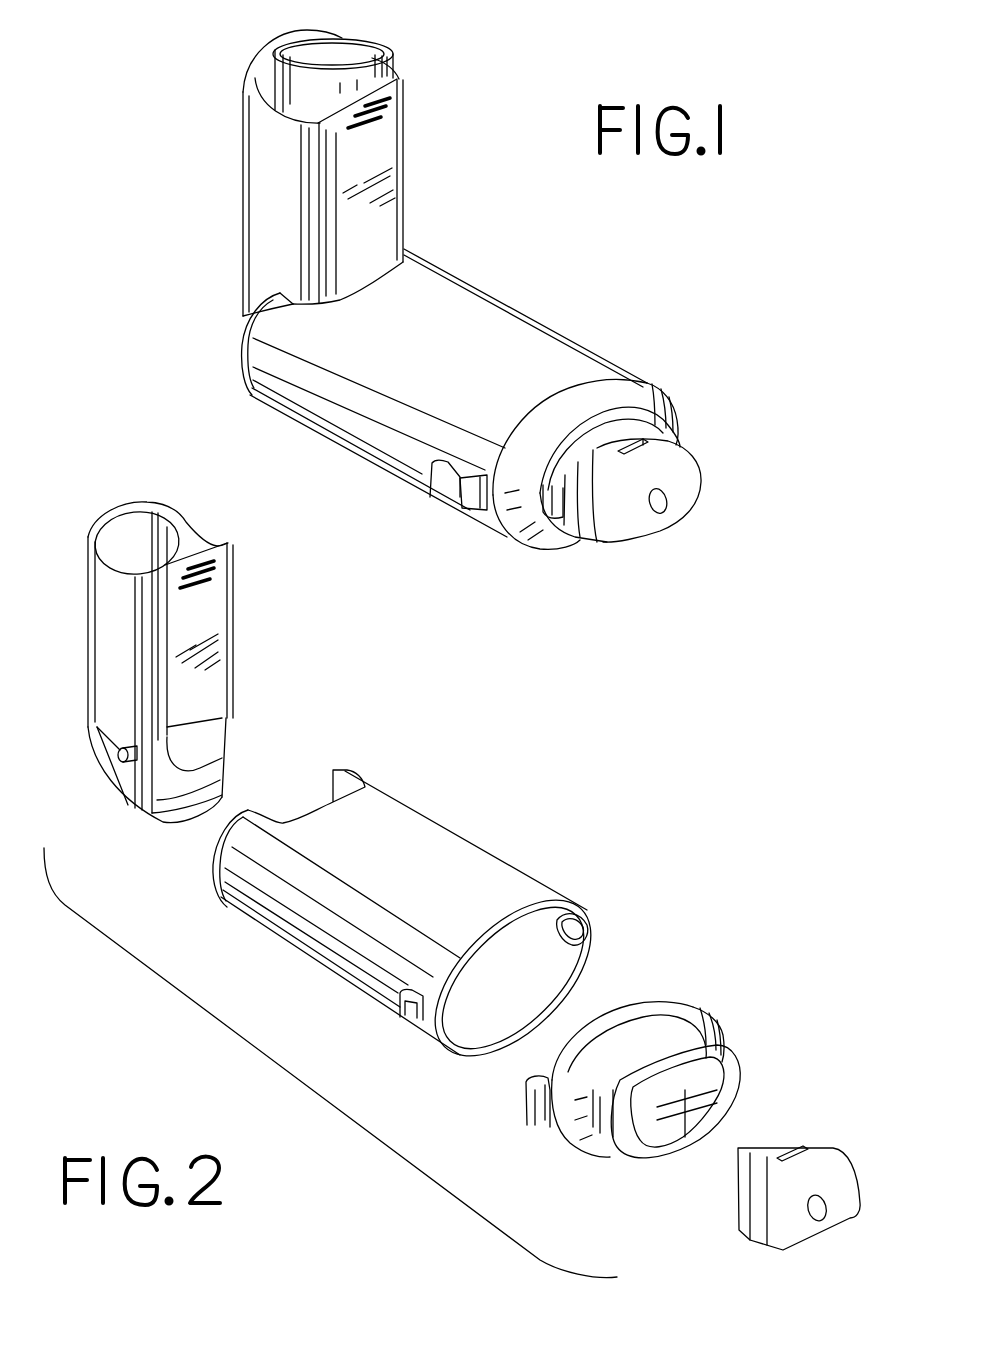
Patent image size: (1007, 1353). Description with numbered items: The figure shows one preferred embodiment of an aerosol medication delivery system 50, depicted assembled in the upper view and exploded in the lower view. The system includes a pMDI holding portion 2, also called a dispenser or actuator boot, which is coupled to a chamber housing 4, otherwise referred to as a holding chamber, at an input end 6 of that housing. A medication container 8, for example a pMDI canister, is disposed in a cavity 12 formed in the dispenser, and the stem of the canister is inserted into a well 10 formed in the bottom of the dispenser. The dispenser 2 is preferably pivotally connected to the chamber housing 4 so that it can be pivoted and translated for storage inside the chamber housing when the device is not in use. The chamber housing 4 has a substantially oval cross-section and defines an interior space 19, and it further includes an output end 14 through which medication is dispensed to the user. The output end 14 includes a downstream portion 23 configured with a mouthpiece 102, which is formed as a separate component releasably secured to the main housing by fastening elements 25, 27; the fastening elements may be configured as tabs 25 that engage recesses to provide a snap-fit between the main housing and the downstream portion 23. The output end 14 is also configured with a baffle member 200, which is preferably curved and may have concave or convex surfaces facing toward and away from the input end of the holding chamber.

In FIG. 1, the aerosol medication delivery system 50 is at (182, 139).
In FIG. 1, the pMDI holding portion 2 is at (230, 232).
In FIG. 2, the pMDI holding portion 2 is at (74, 677).
In FIG. 1, the cavity 12 is at (267, 80).
In FIG. 2, the cavity 12 is at (124, 547).
In FIG. 1, the medication container 8 is at (382, 50).
In FIG. 1, the chamber housing 4 is at (521, 352).
In FIG. 2, the chamber housing 4 is at (450, 860).
In FIG. 1, the input end 6 is at (242, 360).
In FIG. 2, the input end 6 is at (213, 880).
In FIG. 1, the fastening element 27 is at (432, 464).
In FIG. 2, the fastening element 27 is at (402, 1000).
In FIG. 1, the tab 25 is at (473, 497).
In FIG. 2, the tab 25 is at (557, 1143).
In FIG. 1, the output end 14 is at (510, 543).
In FIG. 2, the output end 14 is at (477, 1057).
In FIG. 1, the downstream portion 23 is at (712, 410).
In FIG. 2, the downstream portion 23 is at (757, 1058).
In FIG. 1, the mouthpiece 102 is at (603, 453).
In FIG. 2, the mouthpiece 102 is at (692, 1005).
In FIG. 2, the well 10 is at (168, 754).
In FIG. 2, the interior space 19 is at (555, 960).
In FIG. 2, the baffle member 200 is at (693, 1130).